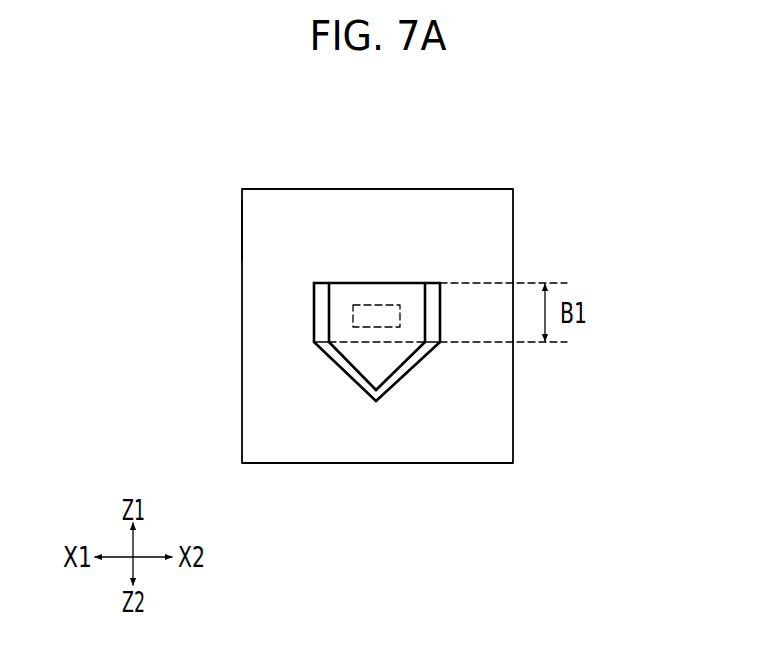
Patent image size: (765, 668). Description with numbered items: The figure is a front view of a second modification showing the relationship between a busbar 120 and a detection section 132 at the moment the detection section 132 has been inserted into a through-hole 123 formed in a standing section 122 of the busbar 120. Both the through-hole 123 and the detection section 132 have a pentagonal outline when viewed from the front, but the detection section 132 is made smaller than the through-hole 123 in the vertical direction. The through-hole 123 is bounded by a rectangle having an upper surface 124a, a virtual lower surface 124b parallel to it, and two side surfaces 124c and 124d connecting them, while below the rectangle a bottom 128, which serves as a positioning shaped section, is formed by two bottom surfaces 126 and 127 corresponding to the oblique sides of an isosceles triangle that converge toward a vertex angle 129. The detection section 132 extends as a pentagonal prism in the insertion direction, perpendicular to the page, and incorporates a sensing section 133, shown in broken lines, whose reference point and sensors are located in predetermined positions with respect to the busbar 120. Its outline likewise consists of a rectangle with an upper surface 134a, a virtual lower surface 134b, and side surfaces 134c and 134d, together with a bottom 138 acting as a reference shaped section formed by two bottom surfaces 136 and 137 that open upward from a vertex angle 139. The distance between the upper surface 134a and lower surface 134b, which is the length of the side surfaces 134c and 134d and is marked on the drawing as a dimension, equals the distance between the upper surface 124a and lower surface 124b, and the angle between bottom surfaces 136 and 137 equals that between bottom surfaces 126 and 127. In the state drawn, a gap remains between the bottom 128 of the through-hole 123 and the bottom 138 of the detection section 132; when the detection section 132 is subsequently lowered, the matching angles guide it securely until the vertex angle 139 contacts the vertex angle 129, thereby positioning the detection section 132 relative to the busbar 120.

The busbar 120 is at (500, 212).
The standing section 122 is at (242, 228).
The through-hole 123 is at (329, 293).
The upper surface 124a is at (433, 283).
The virtual lower surface 124b is at (427, 349).
The side surface 124c is at (313, 304).
The side surface 124d is at (440, 297).
The bottom surface 126 is at (340, 368).
The bottom surface 127 is at (407, 372).
The bottom 128 is at (364, 397).
The vertex angle 129 is at (376, 402).
The detection section 132 is at (315, 315).
The sensing section 133 is at (373, 305).
The upper surface 134a is at (348, 283).
The virtual lower surface 134b is at (383, 347).
The side surface 134c is at (331, 320).
The side surface 134d is at (425, 320).
The bottom surface 136 is at (345, 383).
The bottom surface 137 is at (430, 356).
The bottom 138 is at (388, 392).
The vertex angle 139 is at (377, 389).